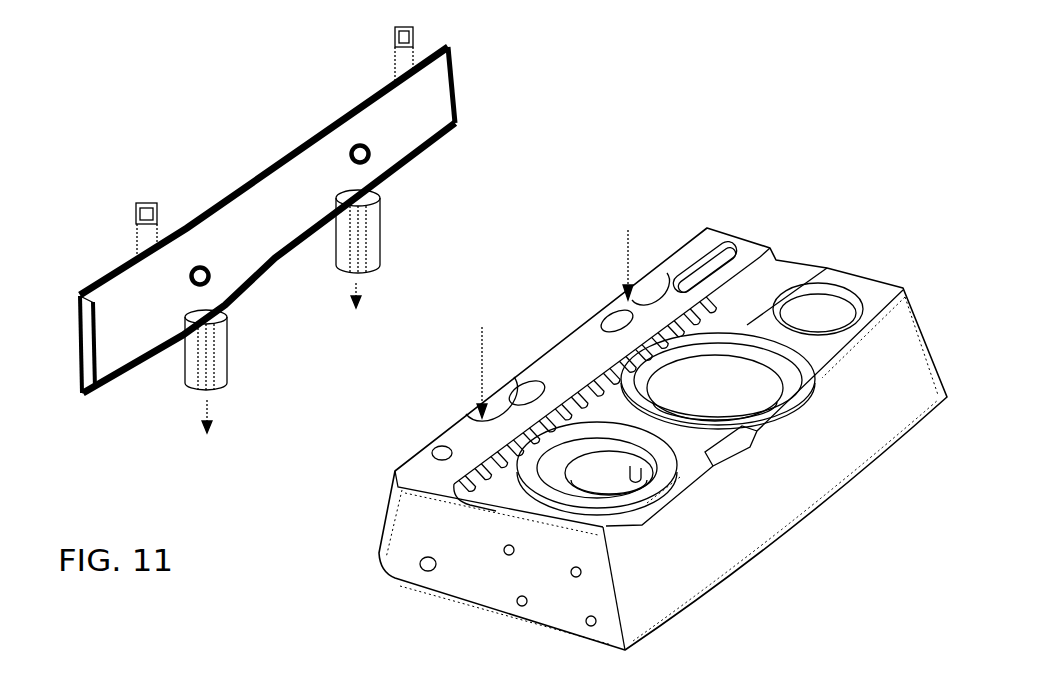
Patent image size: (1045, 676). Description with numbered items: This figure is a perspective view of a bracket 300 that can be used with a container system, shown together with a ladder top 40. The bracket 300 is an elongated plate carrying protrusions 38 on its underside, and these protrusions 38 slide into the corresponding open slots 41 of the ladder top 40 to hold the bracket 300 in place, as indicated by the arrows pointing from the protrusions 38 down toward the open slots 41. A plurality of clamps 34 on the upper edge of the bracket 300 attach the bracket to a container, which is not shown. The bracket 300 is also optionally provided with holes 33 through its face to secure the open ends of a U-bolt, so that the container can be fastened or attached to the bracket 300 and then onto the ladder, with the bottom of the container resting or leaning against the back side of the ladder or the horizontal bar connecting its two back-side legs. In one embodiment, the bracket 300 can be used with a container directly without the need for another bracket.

The bracket 300 is at (242, 147).
The clamps 34 is at (385, 60).
The holes 33 is at (350, 158).
The protrusions 38 is at (367, 238).
The ladder top 40 is at (388, 528).
The open slots 41 is at (626, 298).